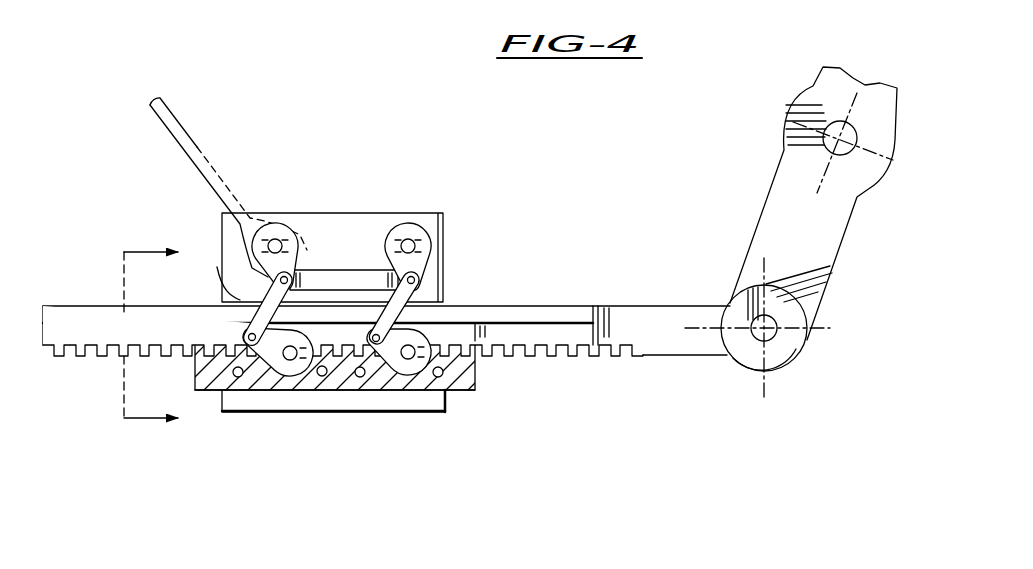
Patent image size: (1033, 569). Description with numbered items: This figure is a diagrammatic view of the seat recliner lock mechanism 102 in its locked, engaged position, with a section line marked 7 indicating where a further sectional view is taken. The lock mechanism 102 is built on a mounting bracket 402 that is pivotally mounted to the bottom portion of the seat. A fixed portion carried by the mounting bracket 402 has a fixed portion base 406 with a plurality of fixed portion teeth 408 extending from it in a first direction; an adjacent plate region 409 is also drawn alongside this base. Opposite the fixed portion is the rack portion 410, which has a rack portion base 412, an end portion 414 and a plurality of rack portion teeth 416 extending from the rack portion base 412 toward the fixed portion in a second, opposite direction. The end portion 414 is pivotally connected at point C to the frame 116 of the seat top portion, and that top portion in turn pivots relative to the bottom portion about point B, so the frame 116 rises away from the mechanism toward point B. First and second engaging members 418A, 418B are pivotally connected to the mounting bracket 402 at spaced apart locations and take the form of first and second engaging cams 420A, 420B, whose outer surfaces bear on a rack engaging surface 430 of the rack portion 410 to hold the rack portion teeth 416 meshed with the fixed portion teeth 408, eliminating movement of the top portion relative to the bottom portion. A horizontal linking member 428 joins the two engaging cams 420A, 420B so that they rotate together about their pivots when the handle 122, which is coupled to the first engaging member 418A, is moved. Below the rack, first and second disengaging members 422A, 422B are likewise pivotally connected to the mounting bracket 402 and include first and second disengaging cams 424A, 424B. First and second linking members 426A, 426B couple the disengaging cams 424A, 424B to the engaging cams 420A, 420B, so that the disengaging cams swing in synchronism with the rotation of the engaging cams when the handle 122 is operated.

The lock mechanism 102 is at (396, 458).
The frame 116 is at (843, 250).
The handle 122 is at (180, 113).
The mounting bracket 402 is at (438, 213).
The fixed portion base 406 is at (482, 377).
The fixed portion teeth 408 is at (484, 364).
The plate 409 is at (478, 403).
The rack portion 410 is at (580, 292).
The rack portion base 412 is at (523, 303).
The end portion 414 is at (713, 357).
The rack portion teeth 416 is at (604, 363).
The first engaging member 418A is at (268, 196).
The second engaging member 418B is at (408, 203).
The first engaging cam 420A is at (217, 267).
The second engaging cam 420B is at (381, 247).
The first disengaging member 422A is at (242, 400).
The second disengaging member 422B is at (444, 413).
The first disengaging cam 424A is at (270, 393).
The second disengaging cam 424B is at (398, 390).
The first linking member 426A is at (257, 325).
The second linking member 426B is at (445, 305).
The horizontal linking member 428 is at (312, 268).
The rack engaging surface 430 is at (70, 300).
The section line 7 is at (151, 337).
The point B is at (793, 85).
The point C is at (787, 375).